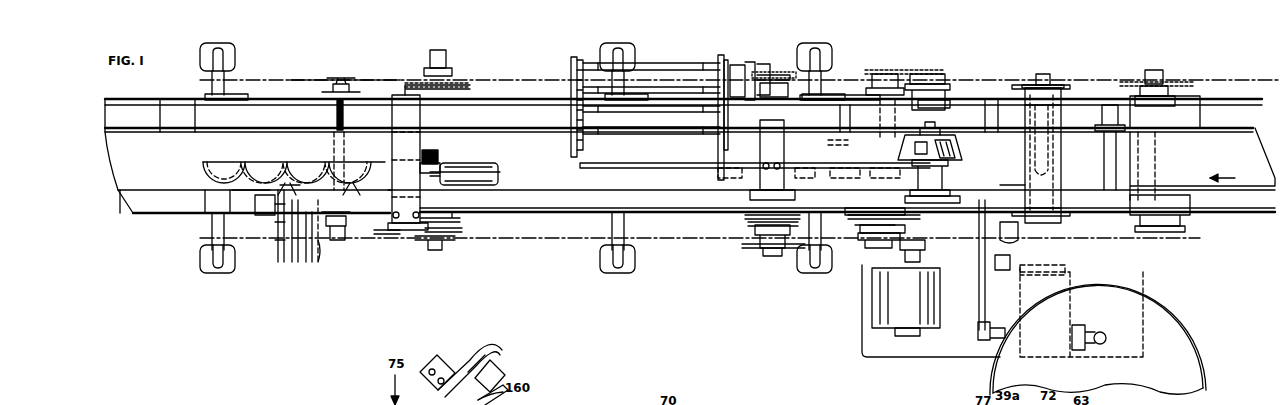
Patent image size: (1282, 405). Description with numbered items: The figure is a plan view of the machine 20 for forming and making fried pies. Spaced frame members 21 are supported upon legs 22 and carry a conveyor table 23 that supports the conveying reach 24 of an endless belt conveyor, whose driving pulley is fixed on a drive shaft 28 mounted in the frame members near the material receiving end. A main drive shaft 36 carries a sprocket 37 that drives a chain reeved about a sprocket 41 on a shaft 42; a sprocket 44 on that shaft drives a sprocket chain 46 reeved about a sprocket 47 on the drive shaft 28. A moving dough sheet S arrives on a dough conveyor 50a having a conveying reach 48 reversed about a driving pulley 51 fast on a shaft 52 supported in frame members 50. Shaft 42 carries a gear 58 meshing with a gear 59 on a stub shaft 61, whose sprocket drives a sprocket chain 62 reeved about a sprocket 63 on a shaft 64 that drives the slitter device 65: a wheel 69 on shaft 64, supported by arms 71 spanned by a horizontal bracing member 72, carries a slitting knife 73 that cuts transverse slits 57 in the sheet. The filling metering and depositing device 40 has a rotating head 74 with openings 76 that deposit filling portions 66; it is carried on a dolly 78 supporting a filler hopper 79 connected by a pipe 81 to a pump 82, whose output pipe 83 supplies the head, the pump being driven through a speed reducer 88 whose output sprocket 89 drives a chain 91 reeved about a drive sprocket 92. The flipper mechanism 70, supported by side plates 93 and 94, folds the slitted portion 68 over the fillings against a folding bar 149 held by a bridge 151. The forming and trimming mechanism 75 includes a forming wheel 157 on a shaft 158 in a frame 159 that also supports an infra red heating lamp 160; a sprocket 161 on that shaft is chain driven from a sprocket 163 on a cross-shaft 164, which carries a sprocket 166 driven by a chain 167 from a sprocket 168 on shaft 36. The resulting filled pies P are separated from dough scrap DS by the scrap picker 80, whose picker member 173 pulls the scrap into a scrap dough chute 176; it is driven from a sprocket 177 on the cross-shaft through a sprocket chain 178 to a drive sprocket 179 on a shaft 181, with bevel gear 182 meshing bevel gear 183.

The machine 20 is at (1175, 46).
The frame members 21 is at (147, 96).
The legs 22 is at (232, 75).
The conveyor table 23 is at (500, 200).
The conveying reach 24 is at (165, 142).
The drive shaft 28 is at (1176, 82).
The main drive shaft 36 is at (776, 65).
The sprocket 37 is at (759, 250).
The filling metering and depositing device 40 is at (968, 165).
The sprocket 41 is at (878, 242).
The shaft 42 is at (862, 92).
The sprocket 44 is at (858, 232).
The sprocket chain 46 is at (1008, 222).
The sprocket 47 is at (1170, 232).
The conveying reach 48 is at (1252, 126).
The frame members 50 is at (1238, 222).
The dough conveyor 50a is at (1232, 232).
The driving pulley 51 is at (1162, 170).
The shaft 52 is at (1163, 204).
The transverse slits 57 is at (846, 152).
The gear 58 is at (892, 70).
The gear 59 is at (926, 72).
The stub shaft 61 is at (950, 80).
The sprocket chain 62 is at (946, 70).
The sprocket 63 is at (1032, 82).
The shaft 64 is at (1050, 78).
The slitter device 65 is at (1058, 153).
The filling portions 66 is at (852, 169).
The slitted portion 68 is at (890, 122).
The wheel 69 is at (1062, 124).
The flipper mechanism 70 is at (668, 48).
The arms 71 is at (1066, 86).
The horizontal bracing member 72 is at (1020, 183).
The slitting knife 73 is at (1052, 175).
The rotating head 74 is at (928, 135).
The forming and trimming mechanism 75 is at (420, 70).
The openings 76 is at (916, 150).
The dolly 78 is at (878, 352).
The filler hopper 79 is at (1208, 336).
The scrap picker 80 is at (310, 276).
The pipe 81 is at (1090, 330).
The pump 82 is at (1072, 318).
The pipe 83 is at (950, 196).
The speed reducer 88 is at (875, 312).
The output sprocket 89 is at (925, 262).
The chain 91 is at (1000, 270).
The drive sprocket 92 is at (1048, 268).
The side plate 93 is at (726, 58).
The side plate 94 is at (571, 90).
The folding bar 149 is at (652, 168).
The bridge 151 is at (760, 149).
The forming wheel 157 is at (435, 162).
The shaft 158 is at (401, 232).
The frame 159 is at (420, 116).
The infra red heating lamp 160 is at (498, 175).
The sprocket 161 is at (386, 240).
The sprocket 163 is at (452, 233).
The cross-shaft 164 is at (433, 250).
The sprocket 166 is at (448, 242).
The chain 167 is at (565, 238).
The sprocket 168 is at (745, 247).
The picker member 173 is at (284, 210).
The scrap dough chute 176 is at (264, 218).
The sprocket 177 is at (440, 85).
The sprocket chain 178 is at (378, 78).
The drive sprocket 179 is at (326, 88).
The shaft 181 is at (337, 114).
The bevel gear 182 is at (336, 240).
The bevel gear 183 is at (328, 252).
The filled pie P is at (303, 163).
The dough scrap DS is at (338, 178).
The dough sheet S is at (1232, 156).